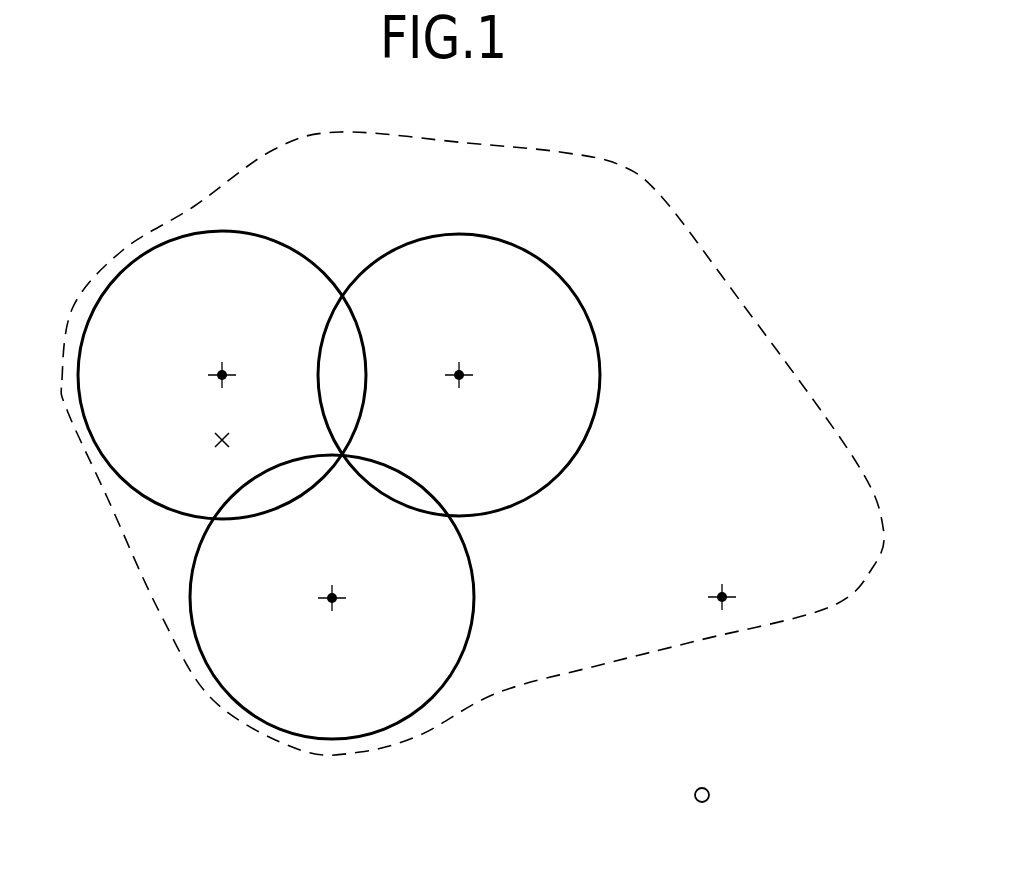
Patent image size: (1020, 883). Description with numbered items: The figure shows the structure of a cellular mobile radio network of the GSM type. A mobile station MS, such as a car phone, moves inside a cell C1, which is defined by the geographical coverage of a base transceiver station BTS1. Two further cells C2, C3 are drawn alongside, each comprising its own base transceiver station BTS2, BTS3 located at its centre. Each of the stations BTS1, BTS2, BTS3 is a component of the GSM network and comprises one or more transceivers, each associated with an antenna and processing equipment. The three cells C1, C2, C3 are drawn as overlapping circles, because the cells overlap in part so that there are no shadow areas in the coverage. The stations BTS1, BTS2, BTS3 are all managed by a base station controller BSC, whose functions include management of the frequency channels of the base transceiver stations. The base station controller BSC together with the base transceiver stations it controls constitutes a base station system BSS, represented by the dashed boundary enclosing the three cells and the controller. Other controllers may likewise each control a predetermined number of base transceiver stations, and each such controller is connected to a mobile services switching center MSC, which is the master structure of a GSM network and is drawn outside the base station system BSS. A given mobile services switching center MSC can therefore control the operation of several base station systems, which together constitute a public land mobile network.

The base station system BSS is at (733, 278).
The cell C1 is at (240, 242).
The cell C2 is at (480, 249).
The cell C3 is at (462, 594).
The base transceiver station BTS1 is at (216, 370).
The base transceiver station BTS2 is at (454, 371).
The base transceiver station BTS3 is at (327, 594).
The mobile station MS is at (215, 438).
The base station controller BSC is at (728, 590).
The mobile services switching center MSC is at (708, 786).